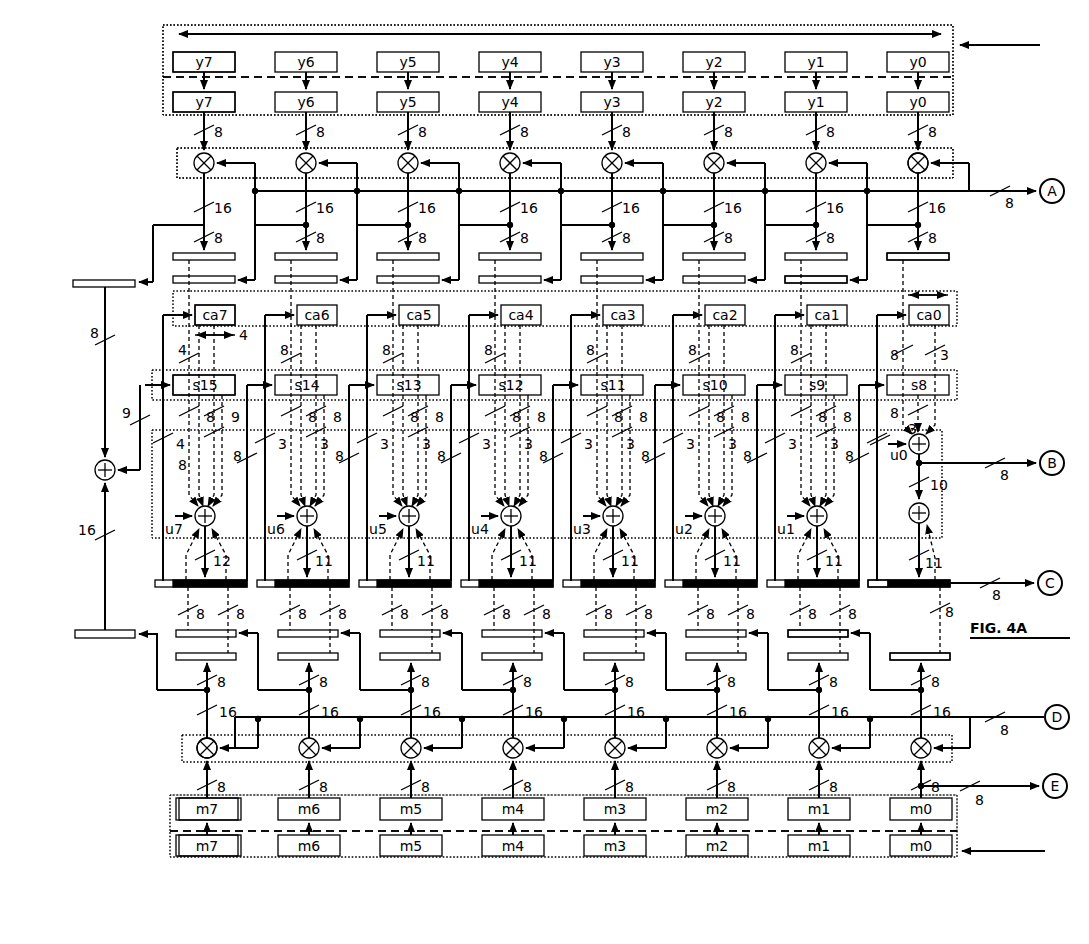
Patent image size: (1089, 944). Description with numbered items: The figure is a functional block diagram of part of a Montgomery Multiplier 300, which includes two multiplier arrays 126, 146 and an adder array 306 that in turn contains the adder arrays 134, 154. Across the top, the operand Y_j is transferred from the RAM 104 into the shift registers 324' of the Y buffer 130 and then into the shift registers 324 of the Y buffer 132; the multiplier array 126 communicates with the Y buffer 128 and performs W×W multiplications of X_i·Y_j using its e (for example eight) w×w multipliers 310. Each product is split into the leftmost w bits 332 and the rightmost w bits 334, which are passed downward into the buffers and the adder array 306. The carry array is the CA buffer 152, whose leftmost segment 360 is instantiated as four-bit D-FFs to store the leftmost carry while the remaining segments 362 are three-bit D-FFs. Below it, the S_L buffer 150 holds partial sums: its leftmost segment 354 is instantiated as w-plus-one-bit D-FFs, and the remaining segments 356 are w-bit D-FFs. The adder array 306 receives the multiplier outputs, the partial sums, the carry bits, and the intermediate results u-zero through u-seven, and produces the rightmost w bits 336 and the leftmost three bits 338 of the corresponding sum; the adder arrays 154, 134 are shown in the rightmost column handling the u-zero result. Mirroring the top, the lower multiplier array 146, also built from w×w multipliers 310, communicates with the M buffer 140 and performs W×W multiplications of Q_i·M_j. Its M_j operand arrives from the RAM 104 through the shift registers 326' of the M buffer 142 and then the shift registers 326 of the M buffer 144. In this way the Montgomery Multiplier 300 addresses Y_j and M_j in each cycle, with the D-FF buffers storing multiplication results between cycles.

The Y buffer 130 is at (163, 34).
The shift registers 324' is at (163, 57).
The Y buffer 128 is at (152, 77).
The shift registers 324 is at (163, 102).
The Y buffer 132 is at (165, 115).
The Montgomery Multiplier 300 is at (1000, 114).
The multiplier array 126 is at (177, 163).
The w×w multipliers 310 is at (930, 154).
The leftmost w bits 332 is at (845, 276).
The rightmost w bits 334 is at (950, 256).
The remaining segments 362 is at (960, 292).
The CA buffer 152 is at (957, 306).
The leftmost segment 360 is at (195, 308).
The leftmost segment 354 is at (185, 378).
The S_L buffer 150 is at (155, 375).
The remaining segments 356 is at (366, 372).
The adder array 154 is at (934, 442).
The adder array 134 is at (934, 513).
The rightmost w bits 336 is at (950, 580).
The leftmost 3 bits 338 is at (876, 588).
The adder array 306 is at (152, 536).
The multiplier array 146 is at (182, 740).
The M buffer 144 is at (170, 796).
The shift registers 326 is at (174, 812).
The M buffer 140 is at (155, 831).
The shift registers 326' is at (171, 852).
The M buffer 142 is at (957, 836).
The RAM 104 is at (1004, 438).